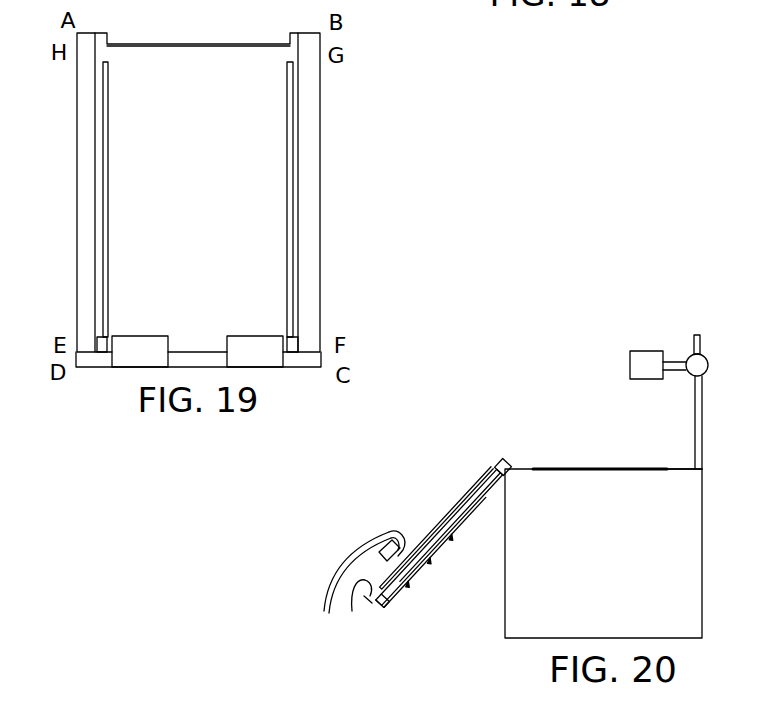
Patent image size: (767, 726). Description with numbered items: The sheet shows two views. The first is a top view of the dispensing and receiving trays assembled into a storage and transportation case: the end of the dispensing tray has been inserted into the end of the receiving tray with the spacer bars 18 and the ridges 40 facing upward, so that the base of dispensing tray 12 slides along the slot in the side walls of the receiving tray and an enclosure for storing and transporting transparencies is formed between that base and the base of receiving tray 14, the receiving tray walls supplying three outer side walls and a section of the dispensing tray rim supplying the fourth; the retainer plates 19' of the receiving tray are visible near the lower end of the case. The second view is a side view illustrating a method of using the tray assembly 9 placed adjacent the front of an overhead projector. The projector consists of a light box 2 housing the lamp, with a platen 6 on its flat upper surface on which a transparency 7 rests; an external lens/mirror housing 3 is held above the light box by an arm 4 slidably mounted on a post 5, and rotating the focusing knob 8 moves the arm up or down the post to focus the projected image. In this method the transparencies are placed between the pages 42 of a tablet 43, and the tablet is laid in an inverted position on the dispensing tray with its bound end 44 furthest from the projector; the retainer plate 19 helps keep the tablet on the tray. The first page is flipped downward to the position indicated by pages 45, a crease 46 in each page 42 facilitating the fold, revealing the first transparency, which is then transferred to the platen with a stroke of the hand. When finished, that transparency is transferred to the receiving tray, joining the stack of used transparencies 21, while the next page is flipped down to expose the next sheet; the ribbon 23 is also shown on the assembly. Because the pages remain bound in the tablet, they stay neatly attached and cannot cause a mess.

In FIG. 20, the light box 2 is at (616, 579).
In FIG. 20, the external lens/mirror housing 3 is at (652, 362).
In FIG. 20, the arm 4 is at (673, 362).
In FIG. 20, the post 5 is at (697, 415).
In FIG. 20, the platen 6 is at (681, 471).
In FIG. 20, the transparency on platen 7 is at (632, 463).
In FIG. 20, the focusing knob 8 is at (699, 365).
In FIG. 20, the tray assembly 9 is at (429, 414).
In FIG. 19, the base of dispensing tray 12 is at (243, 200).
In FIG. 20, the base of dispensing tray 12 is at (499, 463).
In FIG. 20, the base of receiving tray 14 is at (488, 499).
In FIG. 19, the spacer bar 18 is at (97, 343).
In FIG. 20, the spacer bar 18 is at (505, 462).
In FIG. 20, the retainer plate for dispensing tray 19 is at (351, 525).
In FIG. 19, the retainer plate for receiving tray 19' is at (197, 332).
In FIG. 20, the retainer plate for receiving tray 19' is at (335, 610).
In FIG. 20, the stack of 'used' transparencies 21 is at (452, 539).
In FIG. 20, the ribbon 23 is at (363, 601).
In FIG. 19, the ridges 40 is at (107, 150).
In FIG. 20, the pages of tablet 42 is at (448, 507).
In FIG. 20, the tablet 43 is at (420, 553).
In FIG. 20, the bound end of tablet 44 is at (387, 594).
In FIG. 20, the flipped-down pages 45 is at (337, 573).
In FIG. 20, the crease 46 is at (400, 533).